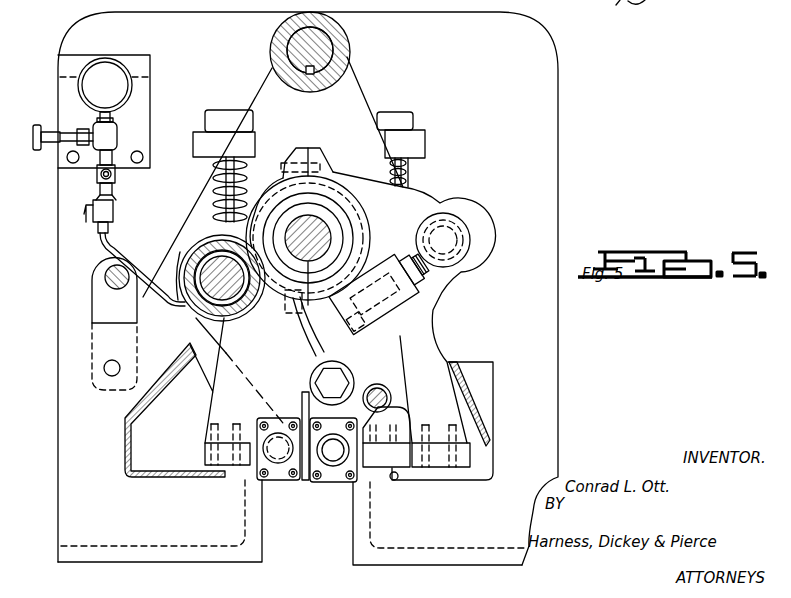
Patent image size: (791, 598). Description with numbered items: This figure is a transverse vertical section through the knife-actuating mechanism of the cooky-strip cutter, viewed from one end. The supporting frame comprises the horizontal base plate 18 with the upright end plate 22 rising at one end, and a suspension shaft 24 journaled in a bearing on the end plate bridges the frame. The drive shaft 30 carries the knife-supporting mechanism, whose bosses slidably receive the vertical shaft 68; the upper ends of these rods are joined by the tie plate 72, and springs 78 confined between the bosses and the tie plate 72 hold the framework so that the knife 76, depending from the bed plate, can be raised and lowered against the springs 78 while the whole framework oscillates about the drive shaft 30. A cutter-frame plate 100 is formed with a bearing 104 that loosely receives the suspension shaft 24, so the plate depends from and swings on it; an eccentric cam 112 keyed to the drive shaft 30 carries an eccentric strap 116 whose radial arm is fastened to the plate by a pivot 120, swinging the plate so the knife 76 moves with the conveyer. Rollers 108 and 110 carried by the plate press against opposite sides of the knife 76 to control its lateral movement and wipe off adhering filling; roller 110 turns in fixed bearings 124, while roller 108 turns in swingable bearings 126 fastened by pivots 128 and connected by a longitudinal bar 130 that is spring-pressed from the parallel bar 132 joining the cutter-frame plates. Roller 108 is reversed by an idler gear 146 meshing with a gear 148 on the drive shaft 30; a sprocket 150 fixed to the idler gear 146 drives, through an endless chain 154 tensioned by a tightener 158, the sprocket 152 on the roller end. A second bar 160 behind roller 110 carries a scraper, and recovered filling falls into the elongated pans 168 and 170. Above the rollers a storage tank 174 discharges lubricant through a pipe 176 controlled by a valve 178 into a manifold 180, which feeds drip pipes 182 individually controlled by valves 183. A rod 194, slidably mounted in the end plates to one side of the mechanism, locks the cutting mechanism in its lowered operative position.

The base plate 18 is at (353, 562).
The end plate 22 is at (547, 108).
The suspension shaft 24 is at (327, 50).
The drive shaft 30 is at (322, 240).
The vertical shaft 68 is at (212, 170).
The tie plate 72 is at (425, 138).
The knife 76 is at (308, 412).
The springs 78 is at (214, 190).
The cutter-frame plate 100 is at (345, 90).
The bearing 104 is at (342, 32).
The roller 108 is at (336, 462).
The roller 110 is at (270, 455).
The eccentric cam 112 is at (333, 197).
The eccentric strap 116 is at (331, 177).
The pivot 120 is at (458, 248).
The fixed bearings 124 is at (282, 418).
The swingable bearings 126 is at (390, 412).
The pivot 128 is at (343, 378).
The longitudinal bar 130 is at (398, 480).
The bar 132 is at (470, 463).
The idler gear 146 is at (185, 268).
The gear 148 is at (336, 212).
The sprocket 150 is at (180, 283).
The sprocket 152 is at (389, 392).
The endless chain 154 is at (193, 340).
The chain tightener 158 is at (360, 343).
The second bar 160 is at (205, 455).
The pan 168 is at (493, 438).
The pan 170 is at (125, 446).
The storage tank 174 is at (130, 82).
The pipe 176 is at (110, 118).
The valve 178 is at (108, 136).
The manifold 180 is at (114, 174).
The drip pipes 182 is at (110, 248).
The valves 183 is at (112, 215).
The rod 194 is at (95, 268).